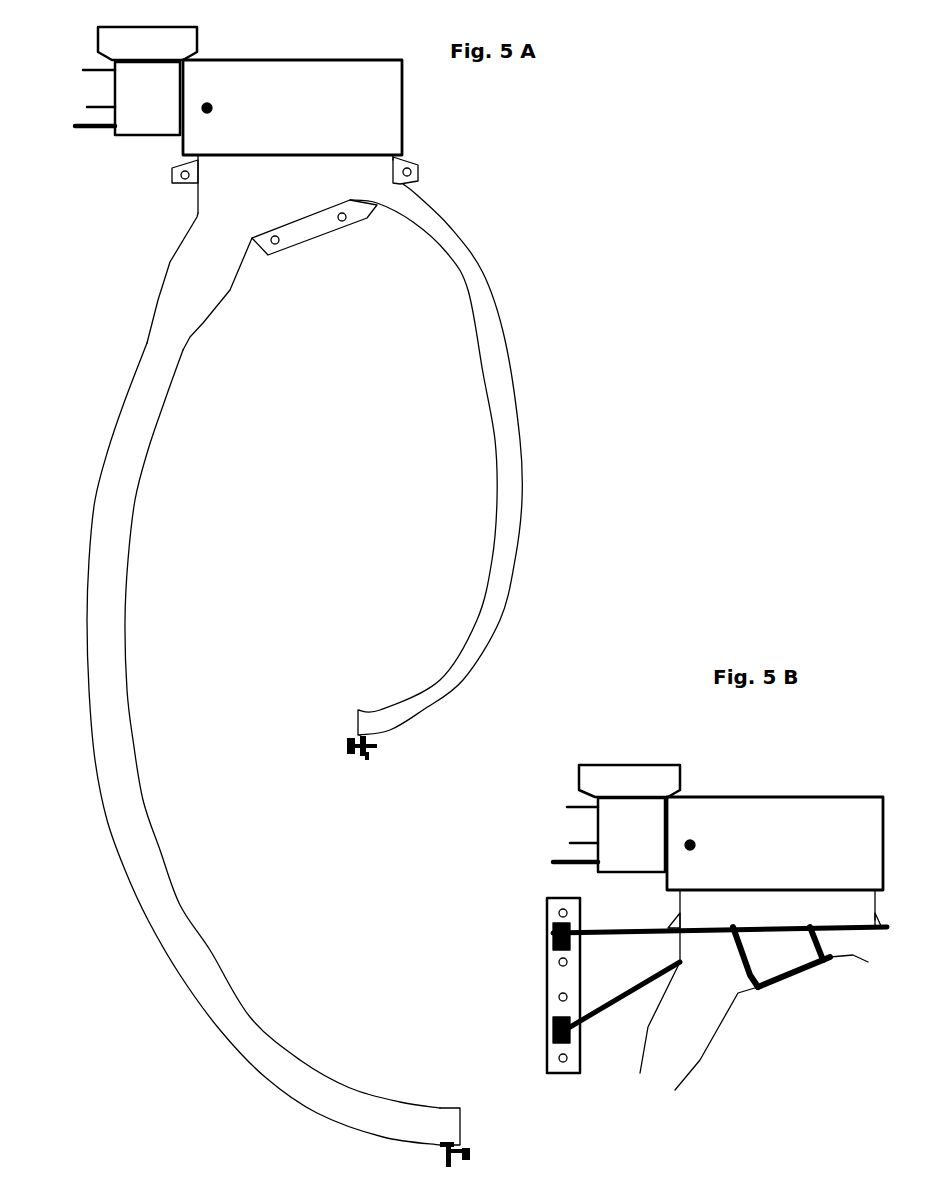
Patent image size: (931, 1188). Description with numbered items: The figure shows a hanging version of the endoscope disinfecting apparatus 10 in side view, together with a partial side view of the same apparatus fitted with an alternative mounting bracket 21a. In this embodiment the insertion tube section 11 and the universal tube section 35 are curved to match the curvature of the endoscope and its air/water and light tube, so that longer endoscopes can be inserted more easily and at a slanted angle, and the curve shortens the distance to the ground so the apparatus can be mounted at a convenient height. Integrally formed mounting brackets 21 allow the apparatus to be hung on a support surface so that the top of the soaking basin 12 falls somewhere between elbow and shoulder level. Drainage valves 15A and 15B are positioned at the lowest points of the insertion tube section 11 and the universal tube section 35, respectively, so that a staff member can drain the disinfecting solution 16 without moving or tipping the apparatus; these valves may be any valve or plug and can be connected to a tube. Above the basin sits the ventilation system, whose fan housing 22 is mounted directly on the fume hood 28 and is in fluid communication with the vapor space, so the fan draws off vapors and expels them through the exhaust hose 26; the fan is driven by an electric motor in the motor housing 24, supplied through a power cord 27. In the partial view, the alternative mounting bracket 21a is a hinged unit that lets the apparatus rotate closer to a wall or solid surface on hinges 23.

In FIG. 5A, the endoscope disinfecting apparatus 10 is at (138, 315).
In FIG. 5A, the insertion tube section 11 is at (127, 588).
In FIG. 5A, the soaking basin 12 is at (197, 207).
In FIG. 5A, the drainage valve 15A is at (462, 1145).
In FIG. 5A, the drainage valve 15B is at (347, 748).
In FIG. 5A, the disinfecting solution 16 is at (314, 258).
In FIG. 5A, the mounting brackets 21 is at (173, 178).
In FIG. 5B, the alternative mounting bracket 21a is at (763, 923).
In FIG. 5A, the fan housing 22 is at (147, 98).
In FIG. 5B, the fan housing 22 is at (631, 835).
In FIG. 5B, the hinges 23 is at (555, 1030).
In FIG. 5A, the motor housing 24 is at (178, 38).
In FIG. 5B, the motor housing 24 is at (632, 772).
In FIG. 5A, the exhaust hose 26 is at (95, 110).
In FIG. 5B, the exhaust hose 26 is at (578, 805).
In FIG. 5A, the power cord 27 is at (78, 160).
In FIG. 5B, the power cord 27 is at (553, 858).
In FIG. 5A, the fume hood 28 is at (292, 107).
In FIG. 5B, the fume hood 28 is at (775, 843).
In FIG. 5A, the universal tube section 35 is at (483, 373).